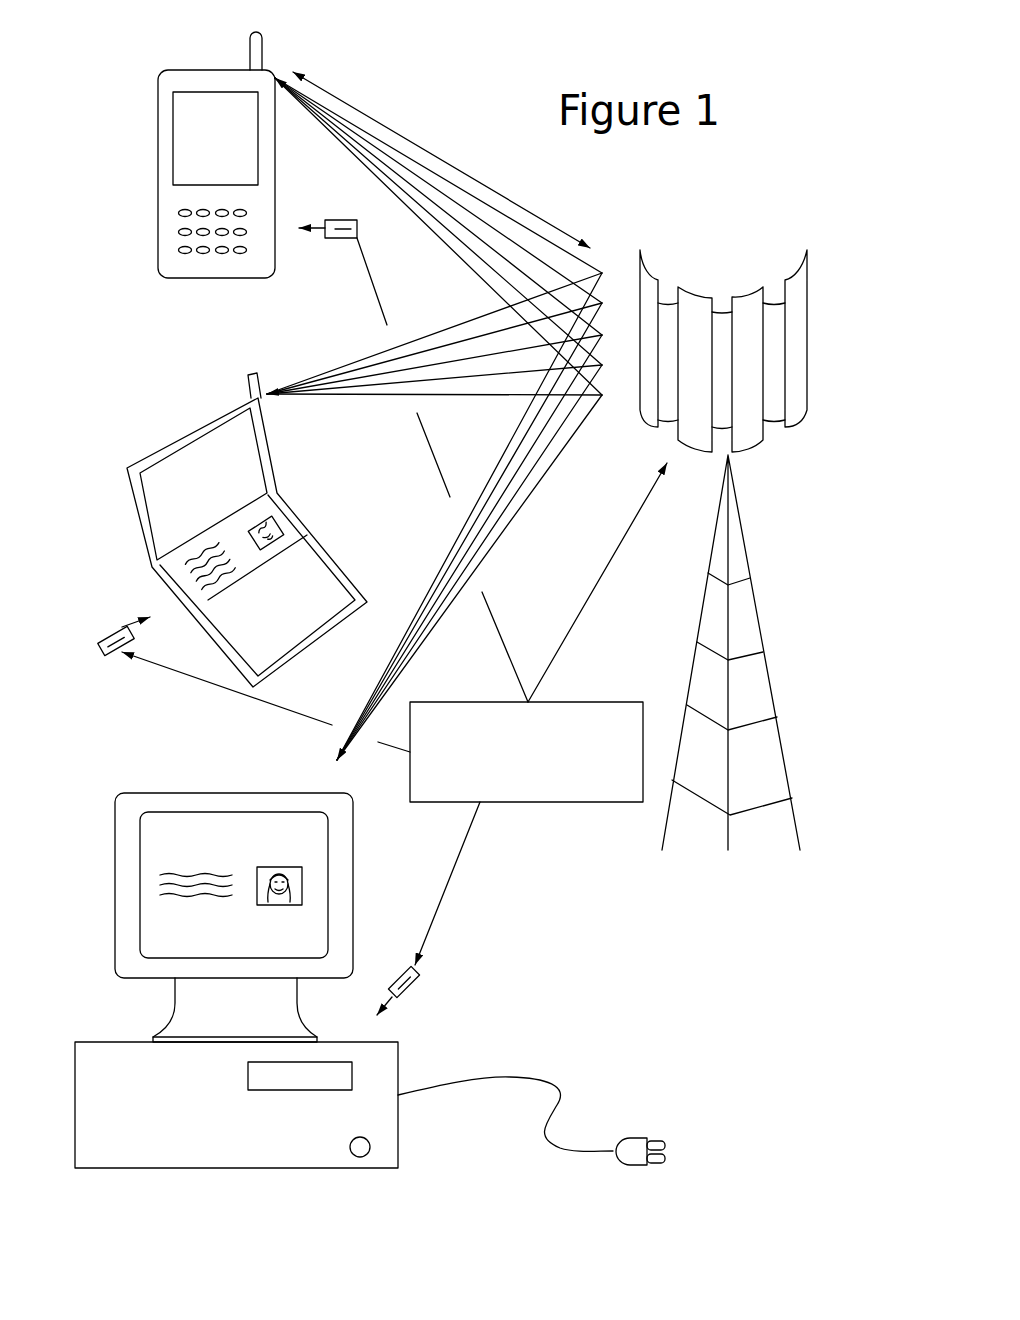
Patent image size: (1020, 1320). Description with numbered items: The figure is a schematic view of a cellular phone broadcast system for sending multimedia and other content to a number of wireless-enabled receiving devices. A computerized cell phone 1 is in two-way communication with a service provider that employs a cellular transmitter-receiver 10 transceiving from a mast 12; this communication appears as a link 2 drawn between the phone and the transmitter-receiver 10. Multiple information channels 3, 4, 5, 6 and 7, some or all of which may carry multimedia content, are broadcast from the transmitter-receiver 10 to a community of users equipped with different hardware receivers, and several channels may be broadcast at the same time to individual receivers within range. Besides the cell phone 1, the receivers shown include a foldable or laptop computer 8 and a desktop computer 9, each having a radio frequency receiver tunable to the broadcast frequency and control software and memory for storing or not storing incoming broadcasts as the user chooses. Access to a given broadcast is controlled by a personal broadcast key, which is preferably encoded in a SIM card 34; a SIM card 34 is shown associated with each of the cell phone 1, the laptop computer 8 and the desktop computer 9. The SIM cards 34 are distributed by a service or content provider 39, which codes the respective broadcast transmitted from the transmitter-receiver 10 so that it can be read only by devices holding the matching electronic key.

The cell phone 1 is at (145, 138).
The communication link 2 is at (430, 146).
The information channel 3 is at (465, 358).
The information channel 4 is at (447, 345).
The information channel 5 is at (445, 340).
The information channel 6 is at (465, 358).
The information channel 7 is at (477, 396).
The laptop computer 8 is at (130, 541).
The desktop computer 9 is at (99, 840).
The cellular transmitter-receiver 10 is at (828, 308).
The mast 12 is at (688, 608).
The SIM card 34 is at (338, 220).
The service or content provider 39 is at (538, 632).